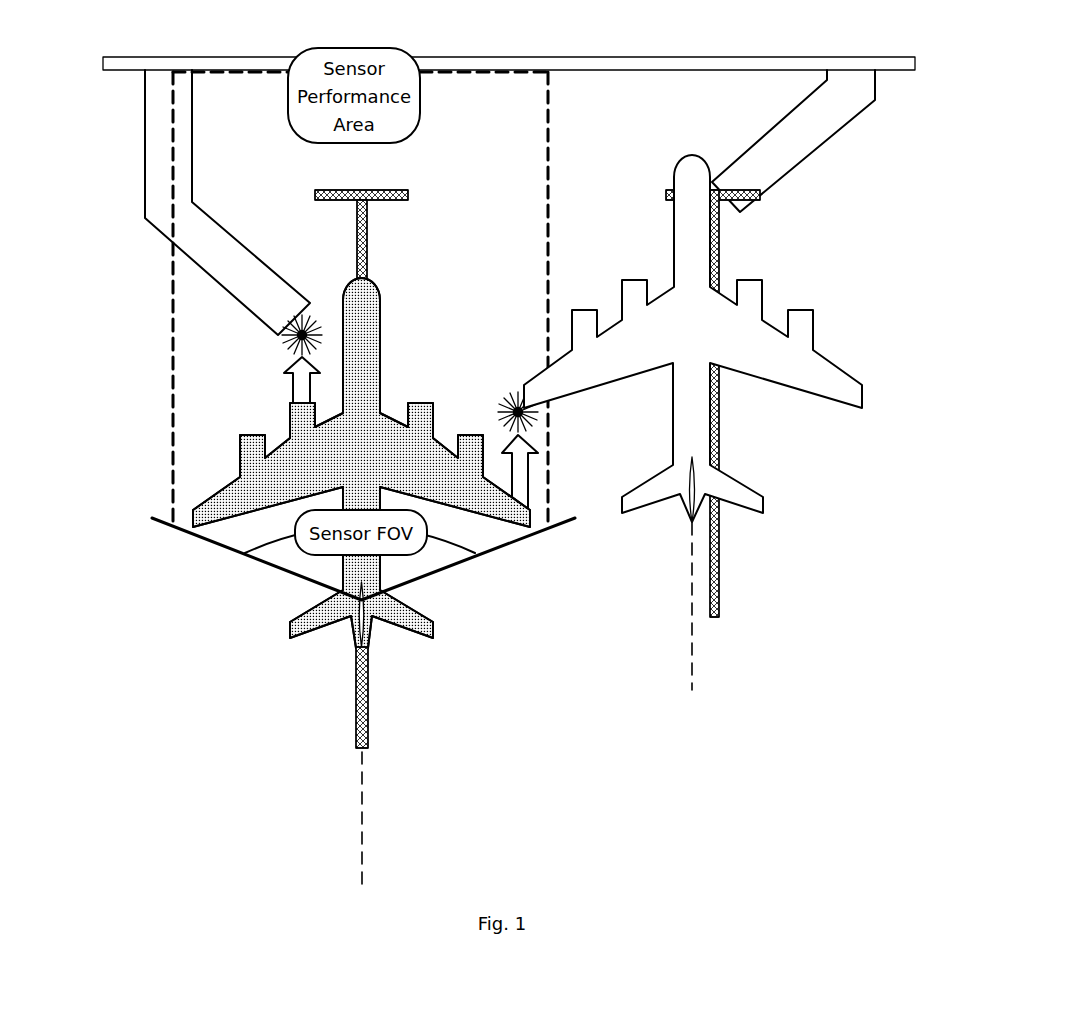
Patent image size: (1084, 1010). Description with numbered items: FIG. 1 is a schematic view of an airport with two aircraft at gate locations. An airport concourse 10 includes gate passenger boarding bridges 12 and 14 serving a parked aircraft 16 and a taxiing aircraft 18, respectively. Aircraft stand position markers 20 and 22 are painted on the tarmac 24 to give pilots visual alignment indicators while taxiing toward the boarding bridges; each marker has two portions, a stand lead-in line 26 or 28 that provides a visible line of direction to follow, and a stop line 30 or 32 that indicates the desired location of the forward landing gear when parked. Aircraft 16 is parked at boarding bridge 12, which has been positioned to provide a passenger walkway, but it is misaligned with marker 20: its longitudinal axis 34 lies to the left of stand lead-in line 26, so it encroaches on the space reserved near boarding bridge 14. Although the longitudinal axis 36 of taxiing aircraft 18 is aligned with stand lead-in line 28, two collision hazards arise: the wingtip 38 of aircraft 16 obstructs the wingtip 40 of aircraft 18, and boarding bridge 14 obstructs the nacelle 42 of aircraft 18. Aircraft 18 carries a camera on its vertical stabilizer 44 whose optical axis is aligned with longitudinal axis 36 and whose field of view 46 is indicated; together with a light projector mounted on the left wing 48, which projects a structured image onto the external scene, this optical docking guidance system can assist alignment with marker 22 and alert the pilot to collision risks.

The airport concourse 10 is at (511, 28).
The gate passenger boarding bridge 12 is at (840, 122).
The gate passenger boarding bridge 14 is at (145, 157).
The parked aircraft 16 is at (860, 358).
The taxiing aircraft 18 is at (208, 471).
The aircraft stand position marker 20 is at (743, 532).
The aircraft stand position marker 22 is at (384, 219).
The tarmac 24 is at (526, 663).
The stand lead-in line 26 is at (719, 587).
The stand lead-in line 28 is at (368, 720).
The stop line 30 is at (747, 205).
The stop line 32 is at (395, 190).
The longitudinal axis 34 is at (692, 600).
The longitudinal axis 36 is at (363, 847).
The wingtip 38 is at (542, 380).
The wingtip 40 is at (525, 510).
The nacelle 42 is at (288, 415).
The vertical stabilizer 44 is at (350, 613).
The field of view 46 is at (275, 535).
The left wing 48 is at (213, 517).